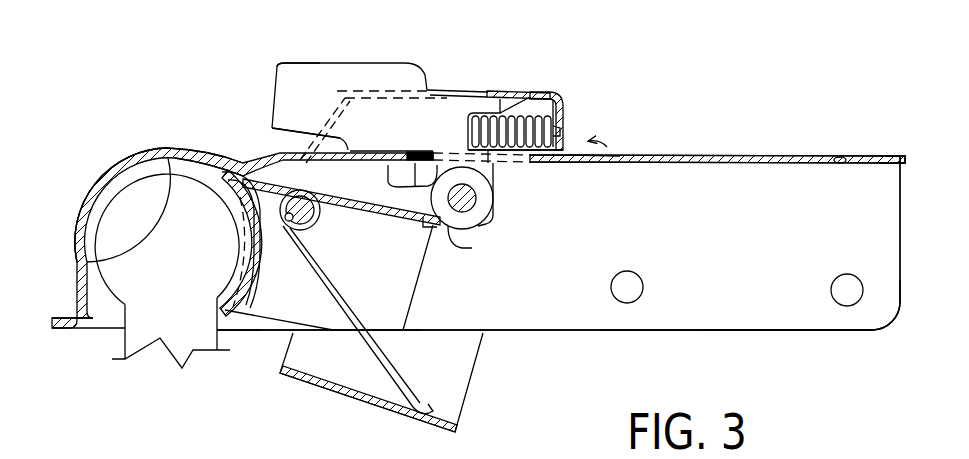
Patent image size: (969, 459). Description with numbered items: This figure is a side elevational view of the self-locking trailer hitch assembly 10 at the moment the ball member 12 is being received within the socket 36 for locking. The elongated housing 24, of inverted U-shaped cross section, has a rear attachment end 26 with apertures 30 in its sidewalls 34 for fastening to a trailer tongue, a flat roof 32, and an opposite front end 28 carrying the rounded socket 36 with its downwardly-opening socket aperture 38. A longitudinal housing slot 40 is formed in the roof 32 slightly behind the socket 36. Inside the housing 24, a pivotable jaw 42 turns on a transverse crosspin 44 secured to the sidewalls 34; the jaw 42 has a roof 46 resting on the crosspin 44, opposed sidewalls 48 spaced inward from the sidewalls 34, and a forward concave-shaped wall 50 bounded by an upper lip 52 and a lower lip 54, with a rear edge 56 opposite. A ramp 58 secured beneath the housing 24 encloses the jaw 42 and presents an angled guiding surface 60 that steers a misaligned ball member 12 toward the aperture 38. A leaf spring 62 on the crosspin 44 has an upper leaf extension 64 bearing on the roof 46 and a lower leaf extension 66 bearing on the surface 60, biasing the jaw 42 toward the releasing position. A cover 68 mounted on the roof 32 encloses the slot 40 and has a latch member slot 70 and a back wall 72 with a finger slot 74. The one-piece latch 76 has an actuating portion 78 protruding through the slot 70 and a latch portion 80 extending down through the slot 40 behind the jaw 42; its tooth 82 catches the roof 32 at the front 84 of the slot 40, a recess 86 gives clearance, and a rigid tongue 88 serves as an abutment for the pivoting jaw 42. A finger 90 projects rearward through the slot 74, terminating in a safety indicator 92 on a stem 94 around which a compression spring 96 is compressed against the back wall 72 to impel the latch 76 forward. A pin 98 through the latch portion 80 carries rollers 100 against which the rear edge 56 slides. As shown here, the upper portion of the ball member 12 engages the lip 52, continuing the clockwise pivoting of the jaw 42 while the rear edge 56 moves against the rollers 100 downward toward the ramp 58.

The self-locking trailer hitch assembly 10 is at (794, 126).
The ball member 12 is at (90, 266).
The housing 24 is at (757, 349).
The rear attachment end 26 is at (873, 141).
The front end 28 is at (114, 134).
The apertures 30 is at (652, 165).
The roof 32 is at (803, 157).
The sidewalls 34 is at (727, 194).
The socket 36 is at (85, 202).
The socket aperture 38 is at (108, 320).
The housing slot 40 is at (520, 165).
The jaw 42 is at (412, 330).
The crosspin 44 is at (290, 232).
The roof of jaw 46 is at (246, 155).
The jaw sidewalls 48 is at (383, 334).
The concave-shaped wall 50 is at (230, 297).
The lip 52 is at (222, 180).
The lower lip 54 is at (215, 323).
The rear edge 56 is at (418, 281).
The ramp 58 is at (467, 400).
The guiding surface 60 is at (323, 390).
The leaf spring 62 is at (316, 271).
The upper leaf extension 64 is at (375, 224).
The lower leaf extension 66 is at (421, 409).
The cover 68 is at (512, 62).
The latch member slot 70 is at (468, 91).
The back wall 72 is at (565, 106).
The finger slot 74 is at (565, 123).
The latch 76 is at (373, 113).
The actuating portion 78 is at (277, 69).
The latch portion 80 is at (497, 181).
The tooth 82 is at (268, 149).
The front of slot 84 is at (350, 147).
The recess 86 is at (407, 150).
The tongue 88 is at (388, 179).
The finger 90 is at (592, 161).
The safety indicator 92 is at (563, 129).
The stem 94 is at (503, 113).
The compression spring 96 is at (540, 110).
The pin 98 is at (474, 223).
The rollers 100 is at (464, 231).